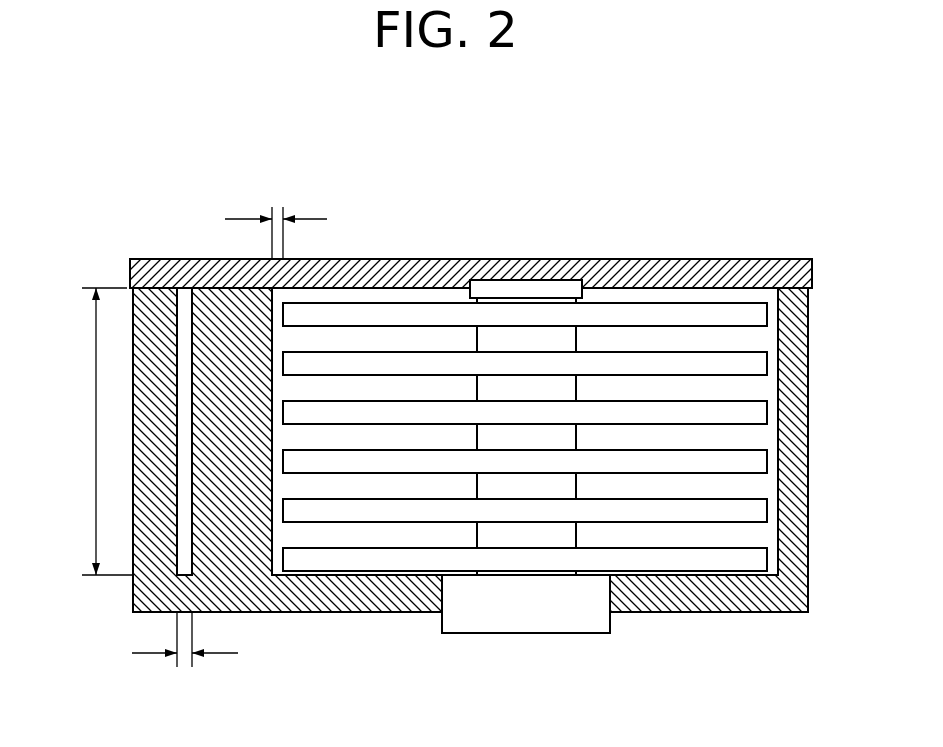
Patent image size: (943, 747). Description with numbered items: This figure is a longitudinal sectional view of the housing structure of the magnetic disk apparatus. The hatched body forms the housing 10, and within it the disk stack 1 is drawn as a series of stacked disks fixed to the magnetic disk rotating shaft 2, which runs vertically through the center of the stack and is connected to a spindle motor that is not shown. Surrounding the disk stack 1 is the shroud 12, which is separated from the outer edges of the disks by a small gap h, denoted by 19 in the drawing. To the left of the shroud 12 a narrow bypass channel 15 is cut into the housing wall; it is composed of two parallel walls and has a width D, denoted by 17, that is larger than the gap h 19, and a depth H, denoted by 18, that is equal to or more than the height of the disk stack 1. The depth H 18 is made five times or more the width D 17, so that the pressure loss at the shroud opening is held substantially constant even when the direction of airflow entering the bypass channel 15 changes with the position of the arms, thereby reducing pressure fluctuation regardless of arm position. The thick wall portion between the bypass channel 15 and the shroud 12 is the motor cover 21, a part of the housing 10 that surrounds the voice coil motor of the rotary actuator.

The disk stack 1 is at (722, 315).
The magnetic disk rotating shaft 2 is at (552, 342).
The housing 10 is at (533, 270).
The shroud 12 is at (270, 380).
The bypass channel 15 is at (183, 298).
The width D 17 is at (200, 695).
The depth H 18 is at (65, 445).
The gap h 19 is at (285, 175).
The motor cover 21 is at (230, 460).